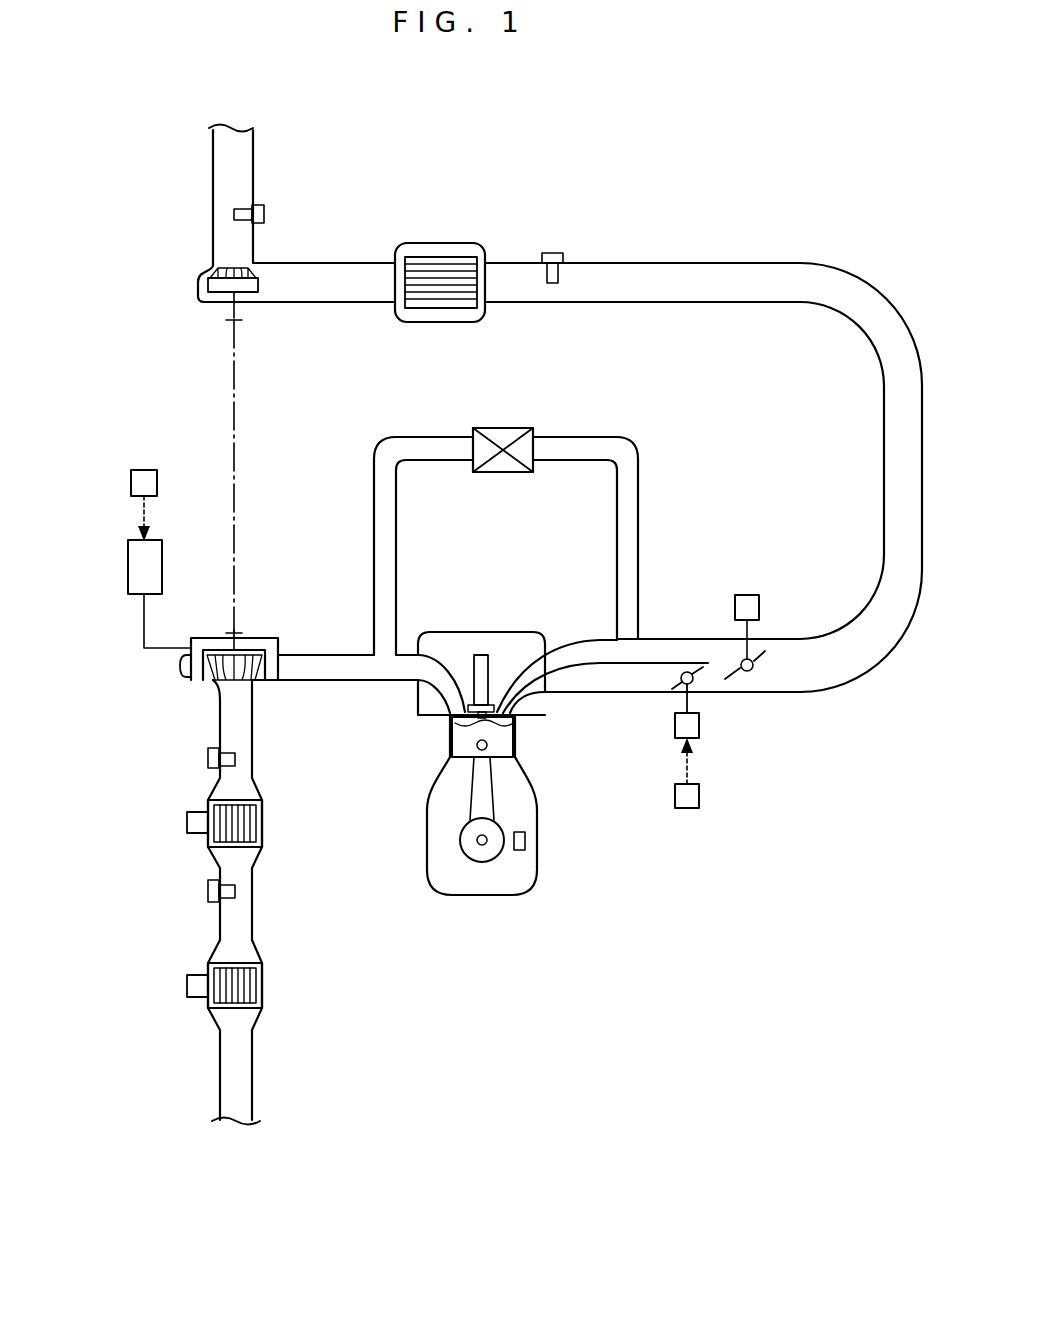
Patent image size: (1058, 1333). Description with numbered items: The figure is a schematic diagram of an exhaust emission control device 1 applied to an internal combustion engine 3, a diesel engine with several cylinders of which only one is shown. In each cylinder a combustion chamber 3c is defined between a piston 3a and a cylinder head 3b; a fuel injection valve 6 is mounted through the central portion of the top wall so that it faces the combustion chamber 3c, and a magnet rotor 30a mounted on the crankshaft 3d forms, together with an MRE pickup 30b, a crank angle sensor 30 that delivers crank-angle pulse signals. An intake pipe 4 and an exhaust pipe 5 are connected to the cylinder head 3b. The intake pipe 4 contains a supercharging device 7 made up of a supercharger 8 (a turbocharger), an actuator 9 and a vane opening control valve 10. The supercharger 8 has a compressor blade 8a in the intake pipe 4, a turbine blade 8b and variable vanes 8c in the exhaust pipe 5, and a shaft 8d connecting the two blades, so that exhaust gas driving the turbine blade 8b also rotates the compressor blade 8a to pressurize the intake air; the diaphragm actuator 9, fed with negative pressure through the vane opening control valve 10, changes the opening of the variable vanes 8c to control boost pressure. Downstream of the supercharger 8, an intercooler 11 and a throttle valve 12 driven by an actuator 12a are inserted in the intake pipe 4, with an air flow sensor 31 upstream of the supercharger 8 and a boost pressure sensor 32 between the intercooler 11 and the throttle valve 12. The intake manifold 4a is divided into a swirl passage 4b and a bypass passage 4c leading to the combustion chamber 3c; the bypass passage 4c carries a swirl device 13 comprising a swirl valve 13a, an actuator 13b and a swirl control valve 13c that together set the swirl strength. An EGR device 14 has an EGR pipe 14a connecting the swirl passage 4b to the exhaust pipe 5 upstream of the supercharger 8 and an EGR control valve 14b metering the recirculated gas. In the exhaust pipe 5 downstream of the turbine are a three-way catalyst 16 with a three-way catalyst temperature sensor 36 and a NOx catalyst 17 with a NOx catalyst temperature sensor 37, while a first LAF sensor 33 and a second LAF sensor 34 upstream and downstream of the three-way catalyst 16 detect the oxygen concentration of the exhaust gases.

The exhaust emission control device 1 is at (123, 1182).
The internal combustion engine 3 is at (500, 788).
The piston 3a is at (522, 748).
The cylinder head 3b is at (510, 640).
The combustion chamber 3c is at (518, 723).
The crankshaft 3d is at (487, 838).
The intake pipe 4 is at (213, 172).
The intake manifold 4a is at (685, 638).
The swirl passage 4b is at (592, 652).
The bypass passage 4c is at (592, 678).
The exhaust pipe 5 is at (340, 683).
The fuel injection valve 6 is at (481, 655).
The supercharging device 7 is at (257, 698).
The supercharger 8 is at (230, 265).
The compressor blade 8a is at (258, 290).
The turbine blade 8b is at (258, 683).
The variable vanes 8c is at (197, 677).
The shaft 8d is at (234, 432).
The actuator 9 is at (128, 568).
The vane opening control valve 10 is at (131, 482).
The intercooler 11 is at (440, 243).
The throttle valve 12 is at (764, 605).
The actuator 12a is at (757, 594).
The swirl device 13 is at (750, 755).
The swirl valve 13a is at (704, 672).
The actuator 13b is at (699, 736).
The swirl control valve 13c is at (786, 742).
The EGR device 14 is at (468, 485).
The EGR pipe 14a is at (374, 530).
The EGR control valve 14b is at (490, 474).
The three-way catalyst 16 is at (262, 823).
The NOx catalyst 17 is at (262, 988).
The crank angle sensor 30 is at (508, 914).
The magnet rotor 30a is at (486, 863).
The MRE pickup 30b is at (521, 852).
The air flow sensor 31 is at (264, 207).
The boost pressure sensor 32 is at (553, 252).
The first LAF sensor 33 is at (208, 757).
The second LAF sensor 34 is at (208, 887).
The three-way catalyst temperature sensor 36 is at (187, 822).
The NOx catalyst temperature sensor 37 is at (187, 985).